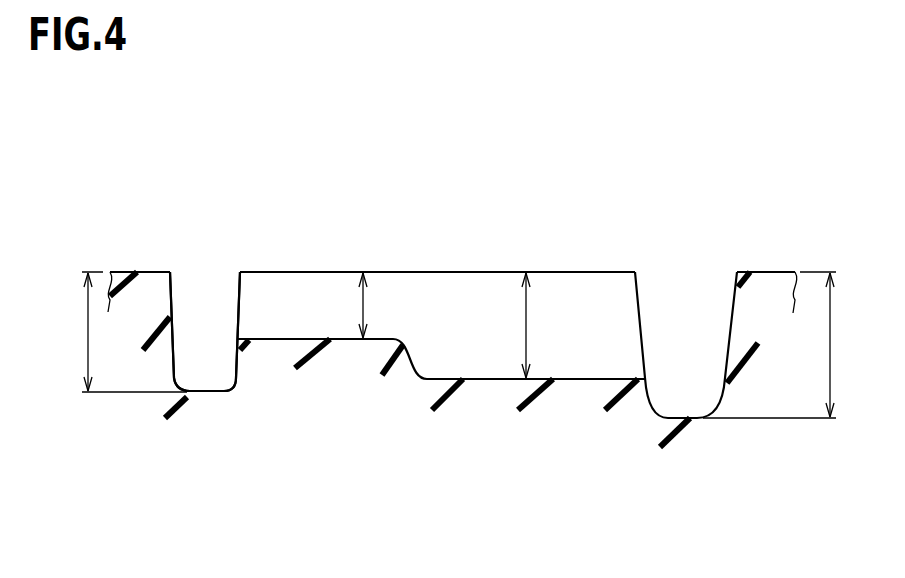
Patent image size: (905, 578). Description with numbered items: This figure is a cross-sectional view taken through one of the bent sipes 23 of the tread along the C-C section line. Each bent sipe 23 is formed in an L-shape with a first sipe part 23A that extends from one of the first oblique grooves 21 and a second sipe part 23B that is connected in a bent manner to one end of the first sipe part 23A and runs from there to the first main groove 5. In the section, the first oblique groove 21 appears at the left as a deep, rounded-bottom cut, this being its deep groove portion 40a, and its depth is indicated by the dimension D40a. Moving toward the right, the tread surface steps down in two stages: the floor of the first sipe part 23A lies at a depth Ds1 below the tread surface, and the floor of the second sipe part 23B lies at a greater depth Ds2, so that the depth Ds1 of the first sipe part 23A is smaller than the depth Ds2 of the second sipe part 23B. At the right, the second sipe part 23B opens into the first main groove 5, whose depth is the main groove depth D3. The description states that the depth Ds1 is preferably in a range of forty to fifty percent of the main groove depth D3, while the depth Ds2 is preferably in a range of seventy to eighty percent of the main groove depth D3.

The first oblique groove 21 is at (205, 303).
The deep groove portion 40a is at (205, 331).
The bent sipe 23 is at (441, 438).
The first sipe part 23A is at (328, 339).
The second sipe part 23B is at (503, 379).
The first main groove 5 is at (680, 317).
The depth of deep groove portion D40a is at (104, 332).
The depth of first sipe part Ds1 is at (365, 303).
The depth of second sipe part Ds2 is at (526, 322).
The main groove depth D3 is at (787, 345).